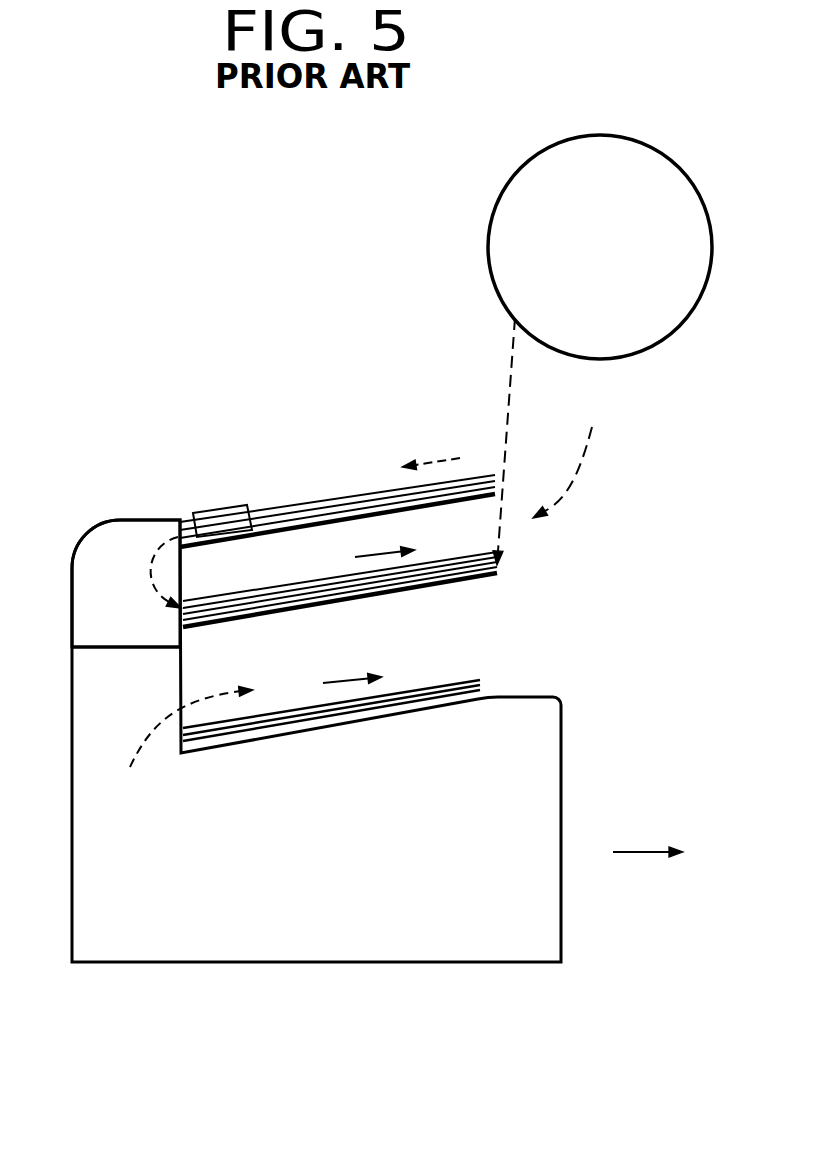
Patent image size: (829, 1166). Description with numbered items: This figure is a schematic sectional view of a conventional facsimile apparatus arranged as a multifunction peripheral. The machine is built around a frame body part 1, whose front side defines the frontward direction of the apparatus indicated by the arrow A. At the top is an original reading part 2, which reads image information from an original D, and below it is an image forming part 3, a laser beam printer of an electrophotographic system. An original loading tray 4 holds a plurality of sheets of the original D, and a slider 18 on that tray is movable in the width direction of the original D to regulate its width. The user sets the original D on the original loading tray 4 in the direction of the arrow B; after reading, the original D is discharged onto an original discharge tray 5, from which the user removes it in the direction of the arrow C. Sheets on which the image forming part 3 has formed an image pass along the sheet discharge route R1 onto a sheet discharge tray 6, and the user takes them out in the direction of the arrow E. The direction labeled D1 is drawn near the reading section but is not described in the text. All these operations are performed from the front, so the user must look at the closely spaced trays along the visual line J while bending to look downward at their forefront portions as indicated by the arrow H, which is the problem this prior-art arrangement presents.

The frame body part 1 is at (554, 667).
The original reading part 2 is at (100, 540).
The image forming part 3 is at (400, 937).
The original loading tray 4 is at (328, 498).
The original discharge tray 5 is at (457, 573).
The sheet discharge tray 6 is at (325, 728).
The slider 18 is at (225, 504).
The arrow A is at (648, 838).
The arrow B is at (431, 447).
The arrow C is at (385, 541).
The original D is at (293, 505).
The arrow E is at (352, 664).
The arrow H is at (578, 470).
The visual line J is at (508, 372).
The direction D1 is at (143, 570).
The sheet discharge route R1 is at (140, 737).